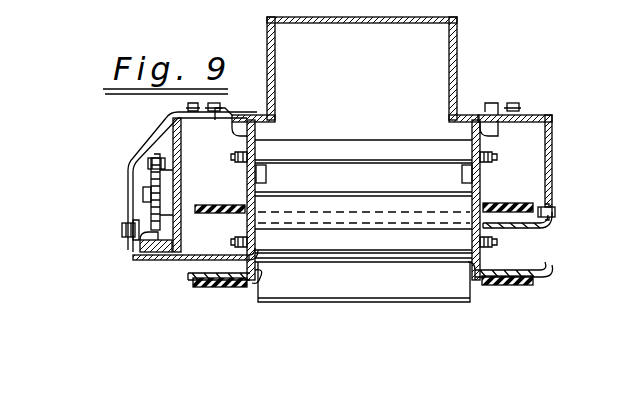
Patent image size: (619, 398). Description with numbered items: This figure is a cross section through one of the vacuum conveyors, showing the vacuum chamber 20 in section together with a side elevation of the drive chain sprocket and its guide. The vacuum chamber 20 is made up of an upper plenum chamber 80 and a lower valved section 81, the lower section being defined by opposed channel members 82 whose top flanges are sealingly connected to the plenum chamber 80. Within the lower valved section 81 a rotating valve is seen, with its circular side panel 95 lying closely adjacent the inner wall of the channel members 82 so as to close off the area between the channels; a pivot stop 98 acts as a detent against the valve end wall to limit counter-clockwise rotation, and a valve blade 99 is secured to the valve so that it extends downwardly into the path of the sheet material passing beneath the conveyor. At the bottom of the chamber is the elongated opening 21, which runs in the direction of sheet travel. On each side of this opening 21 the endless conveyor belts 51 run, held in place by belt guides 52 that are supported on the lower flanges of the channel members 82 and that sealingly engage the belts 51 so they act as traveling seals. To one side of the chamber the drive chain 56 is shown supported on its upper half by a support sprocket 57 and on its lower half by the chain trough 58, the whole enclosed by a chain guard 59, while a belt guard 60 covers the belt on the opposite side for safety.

The vacuum chamber 20 is at (457, 55).
The elongated opening 21 is at (244, 300).
The endless conveyor belts 51 is at (228, 204).
The belt guides 52 is at (195, 273).
The drive chain 56 is at (158, 157).
The support sprockets 57 is at (153, 178).
The chain trough 58 is at (132, 262).
The chain guard 59 is at (130, 152).
The belt guard 60 is at (552, 140).
The upper plenum chamber 80 is at (306, 63).
The lower valved section 81 is at (372, 135).
The channel members 82 is at (232, 128).
The side panels 95 is at (268, 172).
The pivot stops 98 is at (398, 190).
The valve blades 99 is at (360, 290).